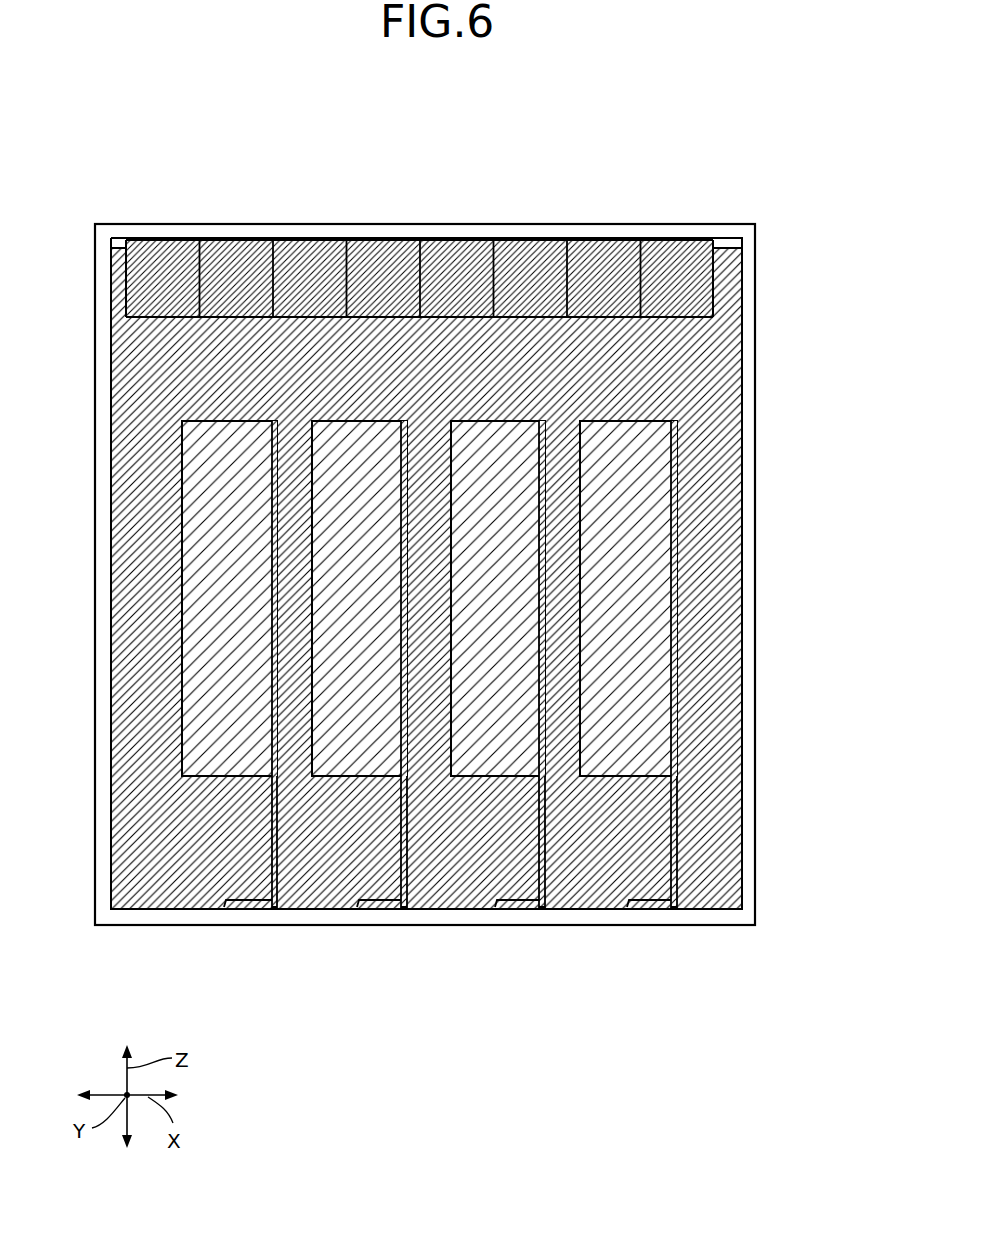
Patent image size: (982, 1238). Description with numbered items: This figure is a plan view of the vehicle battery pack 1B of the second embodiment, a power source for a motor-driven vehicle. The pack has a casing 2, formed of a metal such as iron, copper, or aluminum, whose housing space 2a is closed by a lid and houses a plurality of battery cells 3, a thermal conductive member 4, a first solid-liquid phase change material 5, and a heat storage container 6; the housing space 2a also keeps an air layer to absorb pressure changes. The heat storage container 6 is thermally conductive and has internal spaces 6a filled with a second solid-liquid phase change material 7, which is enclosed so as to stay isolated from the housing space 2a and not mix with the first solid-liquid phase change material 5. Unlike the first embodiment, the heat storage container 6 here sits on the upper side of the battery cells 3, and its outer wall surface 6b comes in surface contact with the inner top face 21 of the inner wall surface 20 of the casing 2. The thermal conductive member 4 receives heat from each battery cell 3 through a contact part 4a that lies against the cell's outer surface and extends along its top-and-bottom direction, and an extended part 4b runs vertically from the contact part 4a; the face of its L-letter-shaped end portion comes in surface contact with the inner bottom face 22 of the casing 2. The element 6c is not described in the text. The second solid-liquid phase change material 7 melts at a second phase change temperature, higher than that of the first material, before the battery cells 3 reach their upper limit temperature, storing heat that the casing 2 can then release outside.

The vehicle battery pack 1B is at (386, 126).
The casing 2 is at (450, 536).
The housing space 2a is at (722, 356).
The battery cell 3 is at (513, 418).
The thermal conductive member 4 is at (426, 664).
The contact part 4a is at (408, 652).
The extended part 4b is at (400, 830).
The first solid-liquid phase change material 5 is at (749, 525).
The heat storage container 6 is at (471, 235).
The internal space 6a is at (612, 240).
The outer wall surface 6b is at (678, 318).
The upper electrode side face 6c is at (573, 260).
The second solid-liquid phase change material 7 is at (476, 236).
The inner wall surface 20 is at (773, 546).
The inner top face 21 is at (733, 258).
The inner bottom face 22 is at (717, 905).